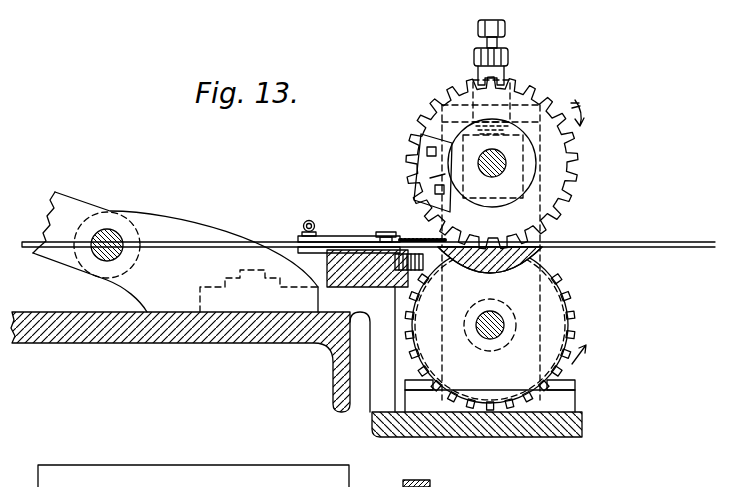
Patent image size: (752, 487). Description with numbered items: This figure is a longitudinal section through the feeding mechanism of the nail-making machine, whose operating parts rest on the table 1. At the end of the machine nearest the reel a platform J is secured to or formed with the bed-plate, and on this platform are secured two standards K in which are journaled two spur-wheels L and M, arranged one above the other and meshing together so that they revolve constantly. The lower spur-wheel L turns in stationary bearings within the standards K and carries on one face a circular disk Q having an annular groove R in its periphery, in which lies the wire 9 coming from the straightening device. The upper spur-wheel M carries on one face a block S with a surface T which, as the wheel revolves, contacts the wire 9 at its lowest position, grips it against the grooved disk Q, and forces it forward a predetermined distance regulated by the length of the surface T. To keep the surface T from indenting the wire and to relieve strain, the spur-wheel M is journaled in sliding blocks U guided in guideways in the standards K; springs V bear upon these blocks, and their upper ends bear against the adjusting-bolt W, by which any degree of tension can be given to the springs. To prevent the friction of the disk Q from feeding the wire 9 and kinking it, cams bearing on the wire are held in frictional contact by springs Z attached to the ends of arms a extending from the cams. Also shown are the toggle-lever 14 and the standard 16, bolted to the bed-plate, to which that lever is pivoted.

The table 1 is at (210, 339).
The toggle-lever 14 is at (63, 208).
The standard 16 is at (241, 289).
The wire 9 is at (650, 248).
The arm a is at (346, 232).
The spring Z is at (308, 218).
The block y is at (386, 226).
The platform J is at (525, 435).
The standards K is at (567, 398).
The lower spur-wheel L is at (508, 257).
The circular disk Q is at (558, 299).
The annular groove R is at (546, 246).
The upper spur-wheel M is at (577, 169).
The sliding blocks U is at (515, 140).
The springs V is at (503, 125).
The adjusting-bolt W is at (497, 33).
The surface T is at (406, 170).
The block S is at (430, 178).